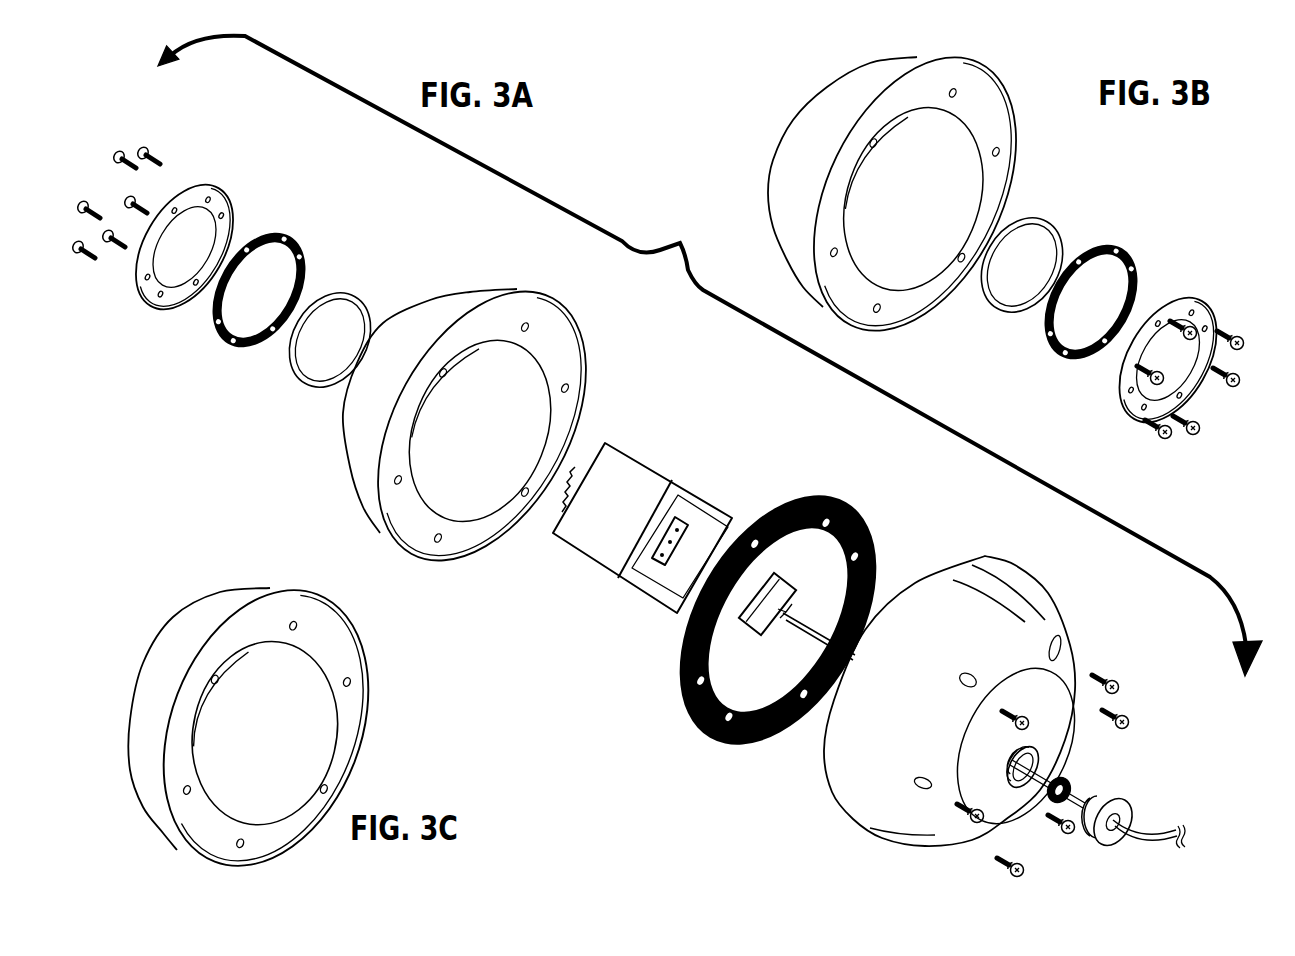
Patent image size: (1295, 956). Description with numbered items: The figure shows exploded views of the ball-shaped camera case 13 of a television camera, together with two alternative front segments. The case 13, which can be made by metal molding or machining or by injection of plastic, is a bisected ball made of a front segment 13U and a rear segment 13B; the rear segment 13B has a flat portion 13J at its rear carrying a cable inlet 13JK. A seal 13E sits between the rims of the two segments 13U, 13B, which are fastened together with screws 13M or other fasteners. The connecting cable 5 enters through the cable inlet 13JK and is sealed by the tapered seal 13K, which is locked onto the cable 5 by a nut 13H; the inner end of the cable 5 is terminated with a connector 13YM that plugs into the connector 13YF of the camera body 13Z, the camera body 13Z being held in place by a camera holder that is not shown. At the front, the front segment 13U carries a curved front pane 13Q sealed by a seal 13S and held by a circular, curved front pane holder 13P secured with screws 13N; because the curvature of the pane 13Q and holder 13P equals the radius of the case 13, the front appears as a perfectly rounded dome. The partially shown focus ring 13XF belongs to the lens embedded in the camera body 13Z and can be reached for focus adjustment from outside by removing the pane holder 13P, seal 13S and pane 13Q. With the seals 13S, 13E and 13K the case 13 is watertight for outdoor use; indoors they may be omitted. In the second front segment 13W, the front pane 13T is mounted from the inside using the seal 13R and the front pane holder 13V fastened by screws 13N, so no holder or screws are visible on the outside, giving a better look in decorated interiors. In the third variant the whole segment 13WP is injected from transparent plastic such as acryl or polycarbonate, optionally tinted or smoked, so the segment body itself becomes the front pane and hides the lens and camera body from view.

In FIG. 3A, the ball-shaped camera case 13 is at (710, 356).
In FIG. 3A, the screws 13N is at (117, 152).
In FIG. 3B, the screws 13N is at (1162, 430).
In FIG. 3A, the front pane holder 13P is at (196, 190).
In FIG. 3A, the seal 13S is at (283, 236).
In FIG. 3A, the curved front pane 13Q is at (352, 305).
In FIG. 3A, the front segment 13U is at (482, 300).
In FIG. 3A, the focus ring 13XF is at (565, 507).
In FIG. 3A, the camera body 13Z is at (648, 470).
In FIG. 3A, the connector 13YF is at (680, 526).
In FIG. 3A, the seal 13E is at (822, 497).
In FIG. 3A, the connector 13YM is at (762, 632).
In FIG. 3A, the rear segment 13B is at (960, 575).
In FIG. 3A, the flat portion 13J is at (1052, 700).
In FIG. 3A, the screws 13M is at (1096, 673).
In FIG. 3A, the cable inlet 13JK is at (1018, 778).
In FIG. 3A, the tapered seal 13K is at (1070, 782).
In FIG. 3A, the nut 13H is at (1116, 805).
In FIG. 3A, the connecting cable 5 is at (1137, 838).
In FIG. 3B, the front segment 13W is at (842, 103).
In FIG. 3B, the front pane 13T is at (1050, 212).
In FIG. 3B, the seal 13R is at (1122, 246).
In FIG. 3B, the front pane holder 13V is at (1205, 308).
In FIG. 3C, the segment 13WP is at (240, 607).